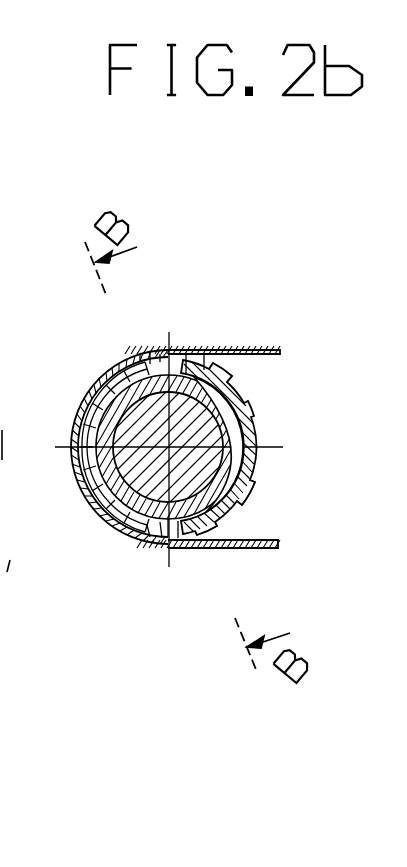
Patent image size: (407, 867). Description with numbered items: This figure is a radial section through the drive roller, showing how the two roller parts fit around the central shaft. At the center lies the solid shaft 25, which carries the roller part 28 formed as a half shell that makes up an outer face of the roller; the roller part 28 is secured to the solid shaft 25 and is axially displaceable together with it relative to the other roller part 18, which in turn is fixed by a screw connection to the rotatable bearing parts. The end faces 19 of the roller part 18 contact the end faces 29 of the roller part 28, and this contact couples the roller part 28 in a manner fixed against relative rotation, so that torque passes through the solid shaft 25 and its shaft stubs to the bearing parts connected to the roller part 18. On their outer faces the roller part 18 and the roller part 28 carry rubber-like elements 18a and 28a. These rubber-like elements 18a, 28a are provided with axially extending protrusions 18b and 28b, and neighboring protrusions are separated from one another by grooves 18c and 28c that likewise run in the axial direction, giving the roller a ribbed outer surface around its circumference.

The roller part 18 is at (97, 507).
The rubber-like element 18a is at (32, 331).
The protrusions 18b is at (130, 543).
The grooves 18c is at (155, 550).
The end faces 19 is at (120, 291).
The solid shaft 25 is at (250, 422).
The roller part 28 is at (230, 513).
The rubber-like element 28a is at (305, 304).
The protrusions 28b is at (333, 473).
The grooves 28c is at (325, 607).
The end faces 29 is at (195, 347).